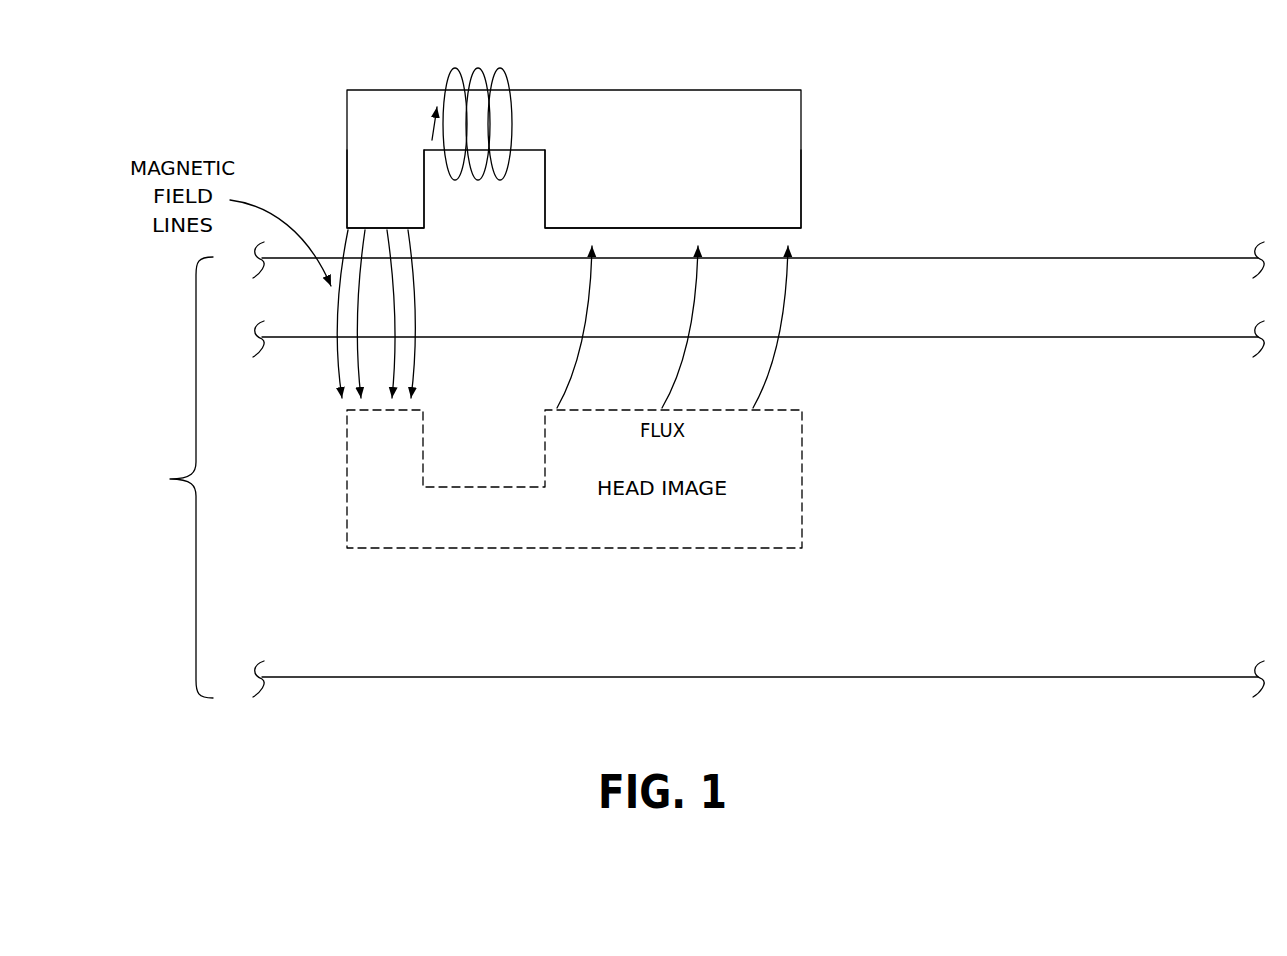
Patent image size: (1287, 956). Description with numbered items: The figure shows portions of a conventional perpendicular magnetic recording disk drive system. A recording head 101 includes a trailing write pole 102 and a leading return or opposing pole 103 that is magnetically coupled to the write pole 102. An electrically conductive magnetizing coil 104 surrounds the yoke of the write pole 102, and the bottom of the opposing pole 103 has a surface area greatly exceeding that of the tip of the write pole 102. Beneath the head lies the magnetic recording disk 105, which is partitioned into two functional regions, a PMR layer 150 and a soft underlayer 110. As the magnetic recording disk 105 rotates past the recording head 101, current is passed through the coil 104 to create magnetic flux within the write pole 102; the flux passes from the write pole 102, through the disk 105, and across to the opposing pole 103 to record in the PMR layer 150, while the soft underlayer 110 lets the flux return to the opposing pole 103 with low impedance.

The recording head 101 is at (717, 140).
The write pole 102 is at (402, 227).
The opposing pole 103 is at (743, 221).
The magnetizing coil 104 is at (555, 62).
The magnetic recording disk 105 is at (168, 477).
The soft underlayer 110 is at (1107, 649).
The PMR layer 150 is at (1270, 317).